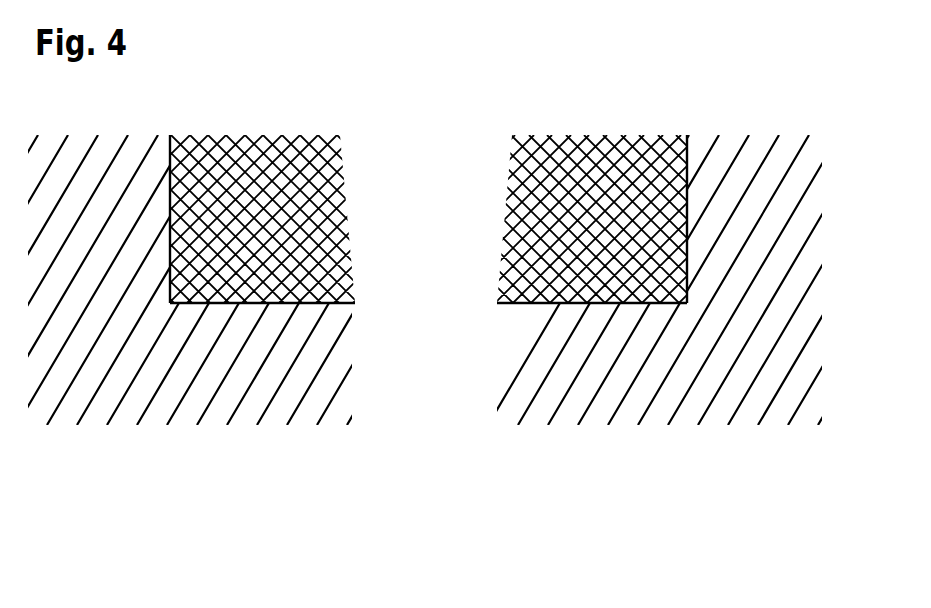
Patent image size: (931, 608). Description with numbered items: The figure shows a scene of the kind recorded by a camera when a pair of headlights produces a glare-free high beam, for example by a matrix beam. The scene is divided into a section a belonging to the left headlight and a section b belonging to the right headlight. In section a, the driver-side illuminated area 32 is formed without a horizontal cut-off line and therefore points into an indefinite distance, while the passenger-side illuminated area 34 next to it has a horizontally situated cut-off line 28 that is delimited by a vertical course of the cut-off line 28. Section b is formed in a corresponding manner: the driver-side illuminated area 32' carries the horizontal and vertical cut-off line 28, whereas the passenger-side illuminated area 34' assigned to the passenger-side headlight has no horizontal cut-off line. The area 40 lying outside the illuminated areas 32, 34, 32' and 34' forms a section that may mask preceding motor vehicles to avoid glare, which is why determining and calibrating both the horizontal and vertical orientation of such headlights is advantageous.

The area located outside the illuminated areas 40 is at (535, 210).
The cut-off line 28 is at (302, 308).
The driver-side illuminated area 32 is at (184, 314).
The passenger-side illuminated area 34 is at (312, 314).
The driver-side illuminated area 32' is at (678, 314).
The passenger-side illuminated area 34' is at (724, 313).
The section a is at (29, 488).
The section b is at (498, 488).